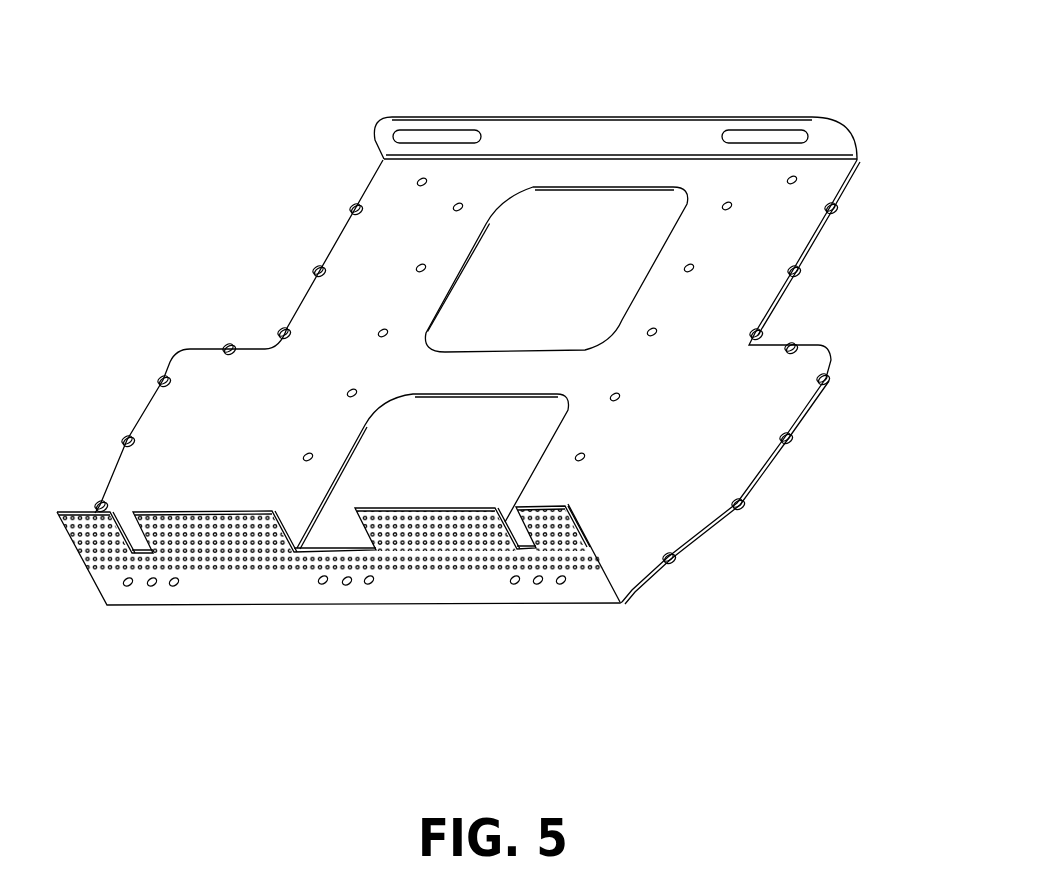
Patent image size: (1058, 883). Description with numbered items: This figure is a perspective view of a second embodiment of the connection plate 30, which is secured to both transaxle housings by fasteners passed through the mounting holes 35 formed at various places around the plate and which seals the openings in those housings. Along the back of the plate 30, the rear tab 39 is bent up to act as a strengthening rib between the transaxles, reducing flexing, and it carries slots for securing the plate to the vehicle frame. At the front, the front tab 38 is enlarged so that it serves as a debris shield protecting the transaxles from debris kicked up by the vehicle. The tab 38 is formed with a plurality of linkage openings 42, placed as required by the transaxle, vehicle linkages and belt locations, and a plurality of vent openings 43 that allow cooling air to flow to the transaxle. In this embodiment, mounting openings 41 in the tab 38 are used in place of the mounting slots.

The plate 30 is at (742, 449).
The mounting holes 35 is at (283, 330).
The front tab 38 is at (468, 593).
The rear tab 39 is at (570, 129).
The mounting openings 41 is at (347, 583).
The linkage openings 42 is at (128, 553).
The vent openings 43 is at (100, 565).